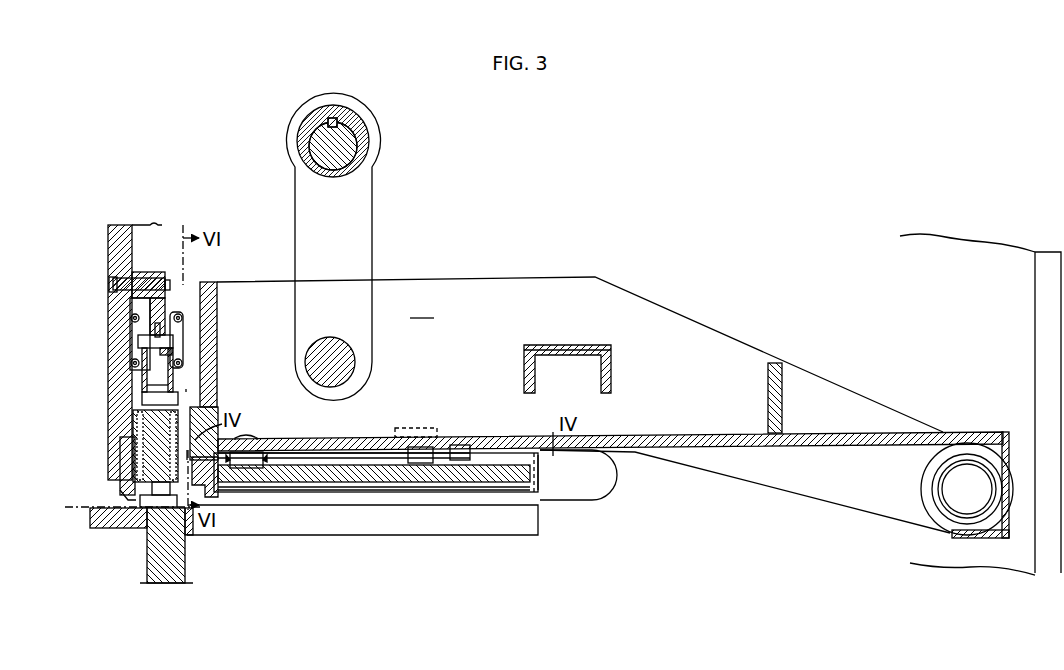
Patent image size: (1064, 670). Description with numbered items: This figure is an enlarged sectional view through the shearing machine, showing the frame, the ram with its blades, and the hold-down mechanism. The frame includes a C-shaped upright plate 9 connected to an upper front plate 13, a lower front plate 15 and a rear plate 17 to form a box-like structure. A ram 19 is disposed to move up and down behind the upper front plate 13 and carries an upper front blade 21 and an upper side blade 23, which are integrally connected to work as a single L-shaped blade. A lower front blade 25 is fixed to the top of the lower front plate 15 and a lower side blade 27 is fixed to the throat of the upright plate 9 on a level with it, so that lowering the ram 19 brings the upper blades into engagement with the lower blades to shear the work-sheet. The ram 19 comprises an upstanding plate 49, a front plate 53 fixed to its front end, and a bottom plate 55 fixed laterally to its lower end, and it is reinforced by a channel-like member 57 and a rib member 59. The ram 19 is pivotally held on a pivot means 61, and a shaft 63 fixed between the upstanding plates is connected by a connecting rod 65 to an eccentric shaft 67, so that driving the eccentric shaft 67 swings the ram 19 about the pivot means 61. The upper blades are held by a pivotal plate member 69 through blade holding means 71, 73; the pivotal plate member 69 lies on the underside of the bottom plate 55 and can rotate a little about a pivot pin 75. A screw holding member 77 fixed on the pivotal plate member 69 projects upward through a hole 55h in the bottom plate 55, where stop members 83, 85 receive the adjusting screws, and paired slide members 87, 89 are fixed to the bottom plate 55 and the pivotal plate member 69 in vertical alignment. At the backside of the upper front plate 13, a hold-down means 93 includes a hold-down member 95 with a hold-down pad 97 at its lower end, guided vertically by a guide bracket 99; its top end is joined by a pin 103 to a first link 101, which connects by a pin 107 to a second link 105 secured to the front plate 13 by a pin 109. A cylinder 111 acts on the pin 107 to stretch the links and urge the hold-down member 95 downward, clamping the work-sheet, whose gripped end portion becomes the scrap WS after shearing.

The upright plate 9 is at (147, 228).
The upper front plate 13 is at (108, 232).
The lower front plate 15 is at (155, 567).
The rear plate 17 is at (1050, 258).
The ram 19 is at (656, 289).
The upper front blade 21 is at (210, 497).
The upper side blade 23 is at (502, 492).
The lower front blade 25 is at (183, 553).
The lower side blade 27 is at (470, 528).
The upstanding plate 49 is at (422, 307).
The front plate 53 is at (217, 284).
The bottom plate 55 is at (652, 433).
The hole 55h is at (465, 437).
The channel-like member 57 is at (612, 370).
The rib member 59 is at (783, 406).
The pivot means 61 is at (950, 492).
The shaft 63 is at (358, 370).
The connecting rod 65 is at (372, 200).
The eccentric shaft 67 is at (356, 150).
The pivotal plate member 69 is at (375, 481).
The blade holding means 71 is at (236, 490).
The blade holding means 73 is at (543, 478).
The pivot pin 75 is at (262, 485).
The screw holding member 77 is at (420, 458).
The stop member 83 is at (402, 452).
The stop member 85 is at (457, 444).
The slide member 87 is at (259, 463).
The slide member 89 is at (247, 466).
The hold-down means 93 is at (188, 389).
The hold-down member 95 is at (122, 470).
The hold-down pad 97 is at (145, 520).
The guide bracket 99 is at (134, 432).
The first link 101 is at (142, 372).
The pin 103 is at (143, 398).
The second link 105 is at (150, 306).
The pin 107 is at (143, 340).
The pin 109 is at (115, 284).
The cylinder 111 is at (130, 350).
The scrap WS is at (107, 505).